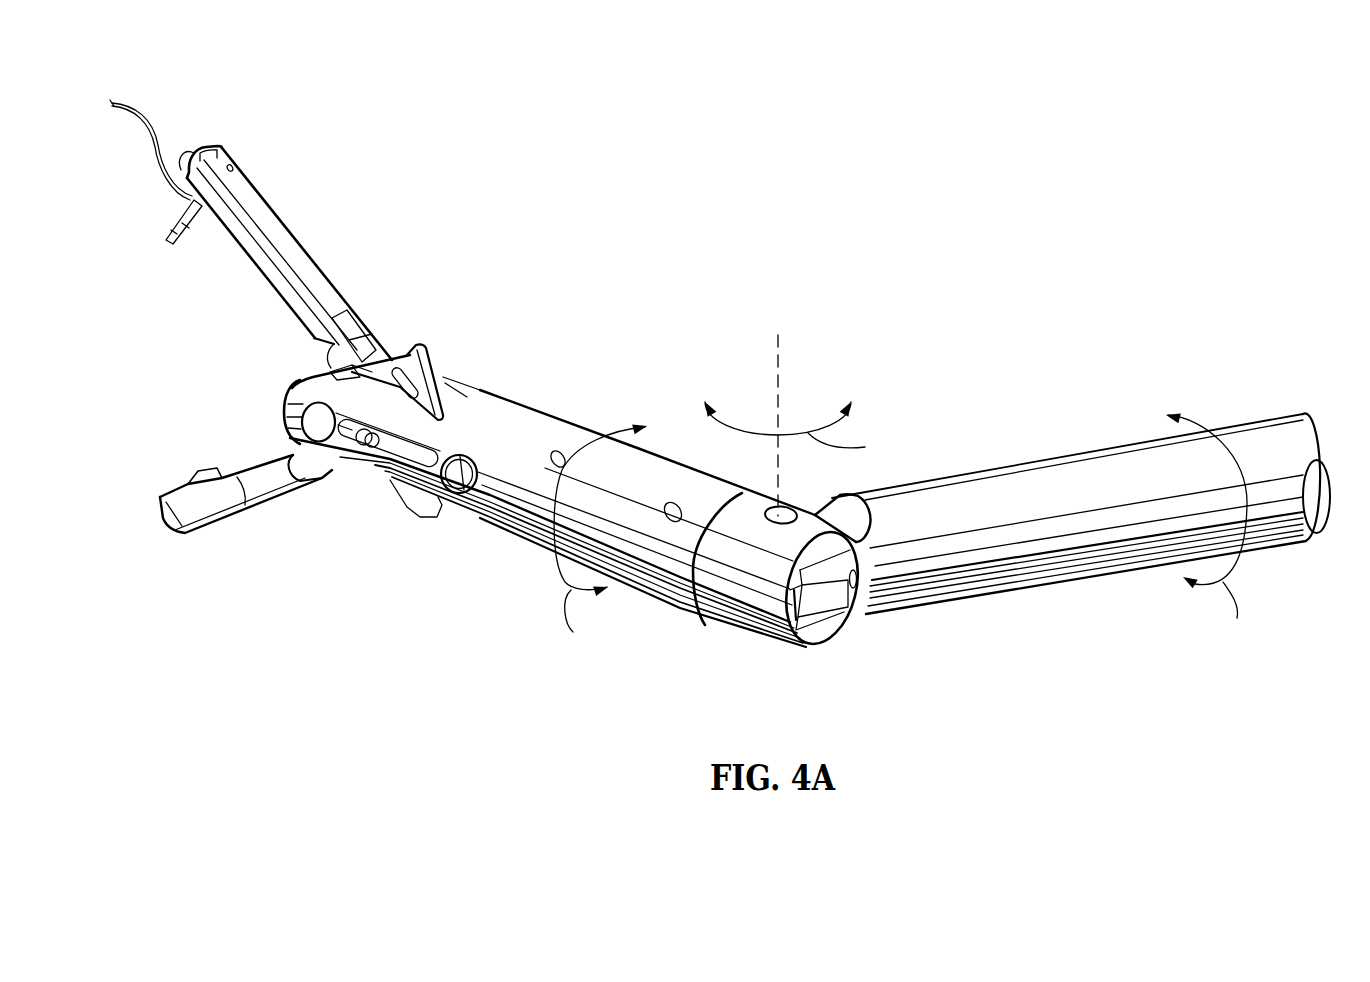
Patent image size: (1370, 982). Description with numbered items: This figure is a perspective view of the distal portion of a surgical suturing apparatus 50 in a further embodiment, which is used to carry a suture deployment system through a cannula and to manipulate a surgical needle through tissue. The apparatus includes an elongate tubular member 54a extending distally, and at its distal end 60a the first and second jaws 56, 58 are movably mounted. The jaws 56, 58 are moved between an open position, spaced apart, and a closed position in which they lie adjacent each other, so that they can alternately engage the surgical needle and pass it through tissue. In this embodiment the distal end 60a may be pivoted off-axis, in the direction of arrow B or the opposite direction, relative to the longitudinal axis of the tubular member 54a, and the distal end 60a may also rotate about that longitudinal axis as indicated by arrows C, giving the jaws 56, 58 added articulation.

The surgical suturing apparatus 50 is at (914, 295).
The first jaw 56 is at (252, 189).
The second jaw 58 is at (206, 536).
The distal end 60a is at (562, 355).
The elongate tubular member 54a is at (1095, 430).